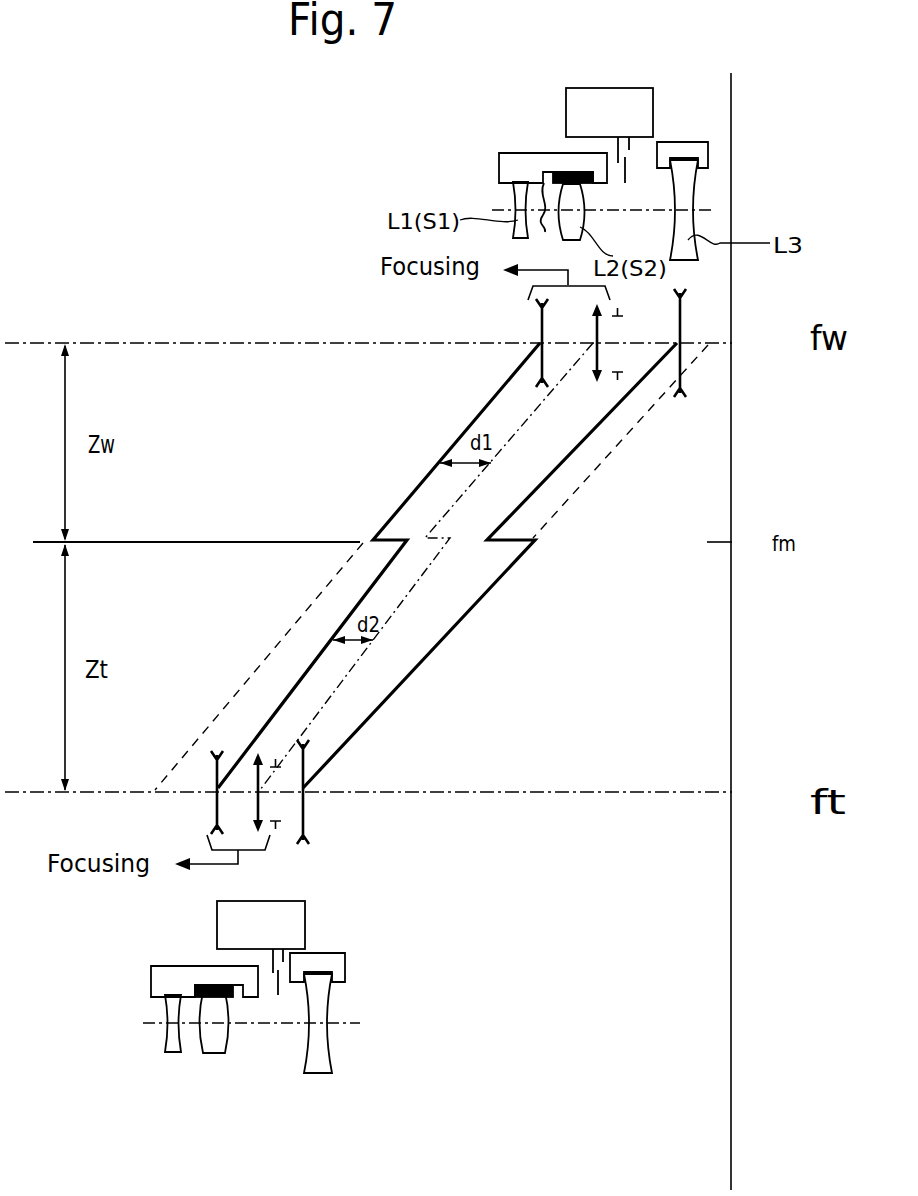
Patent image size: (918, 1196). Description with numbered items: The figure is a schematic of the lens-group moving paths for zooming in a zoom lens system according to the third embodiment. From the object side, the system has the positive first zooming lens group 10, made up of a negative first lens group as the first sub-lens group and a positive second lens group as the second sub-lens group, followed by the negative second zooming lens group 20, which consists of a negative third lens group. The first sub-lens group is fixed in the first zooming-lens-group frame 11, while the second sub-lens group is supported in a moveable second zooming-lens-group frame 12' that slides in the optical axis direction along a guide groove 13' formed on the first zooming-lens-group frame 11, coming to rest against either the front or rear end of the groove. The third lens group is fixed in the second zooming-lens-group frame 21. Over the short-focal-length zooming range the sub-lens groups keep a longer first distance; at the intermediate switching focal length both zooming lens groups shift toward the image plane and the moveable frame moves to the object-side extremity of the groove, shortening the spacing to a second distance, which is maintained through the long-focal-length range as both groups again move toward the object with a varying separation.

The first zooming lens group 10 is at (540, 157).
The first zooming-lens-group frame 11 is at (538, 158).
The second zooming-lens-group frame 12' is at (568, 118).
The guide groove 13' is at (547, 222).
The second zooming lens group 20 is at (694, 618).
The second zooming-lens-group frame 21 is at (678, 147).